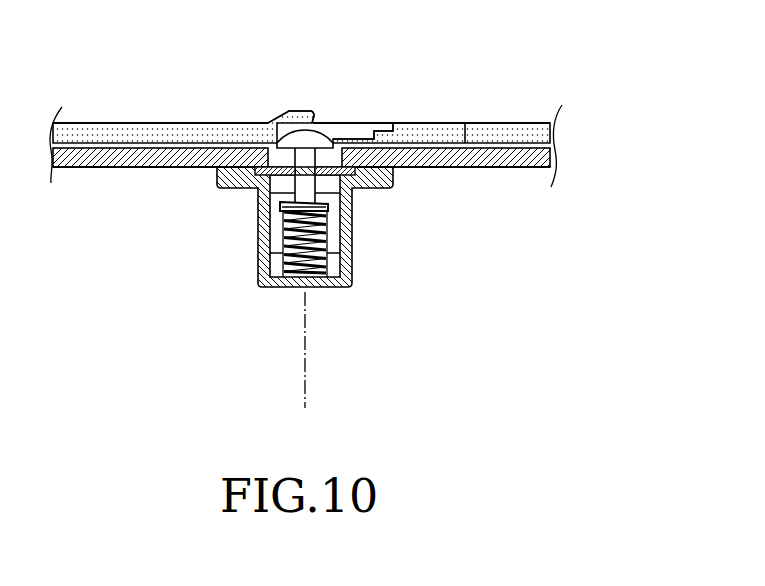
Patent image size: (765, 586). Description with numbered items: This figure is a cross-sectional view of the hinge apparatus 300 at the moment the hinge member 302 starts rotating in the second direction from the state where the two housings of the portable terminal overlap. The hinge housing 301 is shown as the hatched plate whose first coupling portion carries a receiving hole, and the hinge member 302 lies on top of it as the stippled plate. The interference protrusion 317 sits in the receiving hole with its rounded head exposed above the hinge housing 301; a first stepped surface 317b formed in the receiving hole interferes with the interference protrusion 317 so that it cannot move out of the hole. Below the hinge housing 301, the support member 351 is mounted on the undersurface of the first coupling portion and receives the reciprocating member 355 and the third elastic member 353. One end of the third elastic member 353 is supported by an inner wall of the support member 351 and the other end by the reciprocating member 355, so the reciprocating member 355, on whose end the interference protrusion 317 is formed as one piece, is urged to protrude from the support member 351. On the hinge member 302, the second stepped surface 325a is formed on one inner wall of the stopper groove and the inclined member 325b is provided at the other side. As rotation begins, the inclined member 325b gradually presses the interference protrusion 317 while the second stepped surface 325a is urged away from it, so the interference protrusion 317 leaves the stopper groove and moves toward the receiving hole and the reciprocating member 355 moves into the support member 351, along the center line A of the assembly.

The hinge apparatus 300 is at (148, 53).
The hinge housing 301 is at (470, 173).
The hinge member 302 is at (466, 106).
The interference protrusion 317 is at (359, 144).
The first stepped surface 317b is at (329, 158).
The second stepped surface 325a is at (390, 122).
The inclined member 325b is at (288, 115).
The support member 351 is at (345, 242).
The third elastic member 353 is at (284, 278).
The reciprocating member 355 is at (275, 236).
The center axis A is at (311, 344).